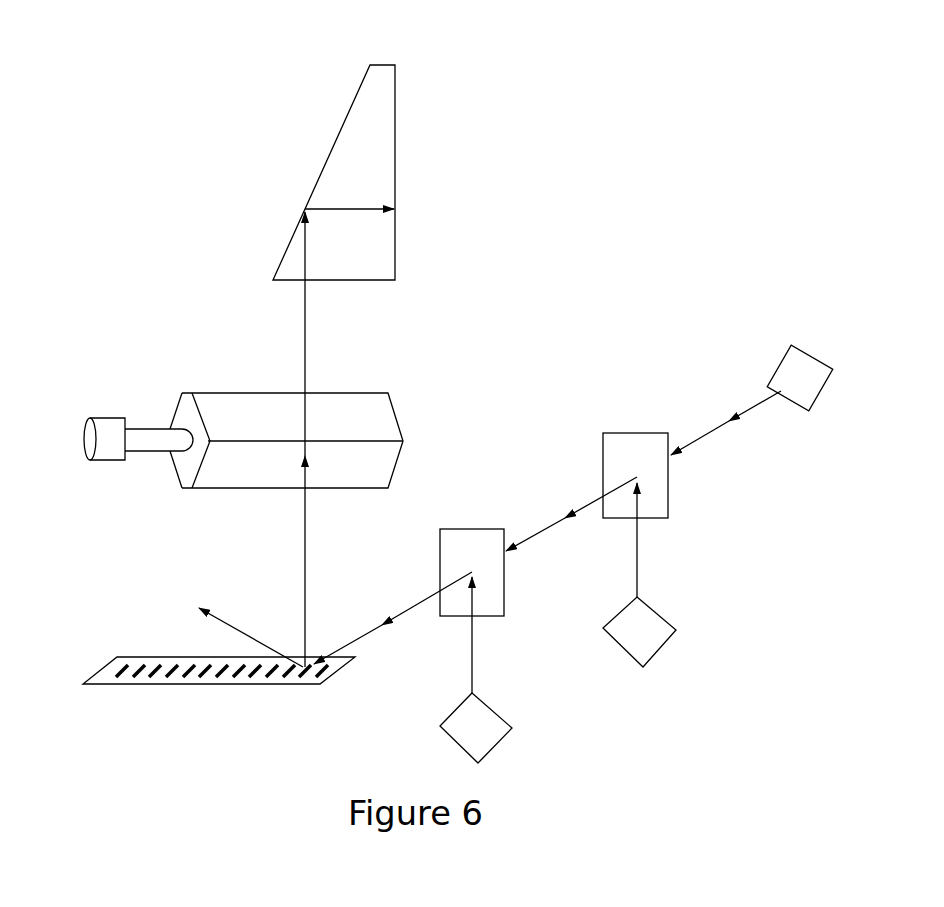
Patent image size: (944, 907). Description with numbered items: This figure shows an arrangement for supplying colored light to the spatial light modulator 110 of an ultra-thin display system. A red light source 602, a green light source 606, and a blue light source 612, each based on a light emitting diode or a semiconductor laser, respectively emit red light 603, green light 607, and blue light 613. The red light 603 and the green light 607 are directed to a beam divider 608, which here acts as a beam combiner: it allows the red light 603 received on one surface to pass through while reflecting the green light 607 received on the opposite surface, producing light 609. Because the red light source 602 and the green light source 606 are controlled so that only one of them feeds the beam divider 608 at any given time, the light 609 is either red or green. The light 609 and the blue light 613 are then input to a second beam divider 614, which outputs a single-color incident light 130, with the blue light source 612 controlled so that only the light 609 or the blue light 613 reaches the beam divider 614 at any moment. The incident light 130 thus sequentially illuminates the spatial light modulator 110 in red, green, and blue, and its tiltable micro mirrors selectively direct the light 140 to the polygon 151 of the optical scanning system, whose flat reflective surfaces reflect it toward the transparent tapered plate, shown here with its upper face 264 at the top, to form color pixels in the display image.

The upper face 264 is at (385, 63).
The polygon 151 is at (358, 391).
The spatial light modulator 110 is at (100, 664).
The light 140 is at (251, 611).
The incident light 130 is at (393, 618).
The beam divider 614 is at (471, 526).
The blue light 613 is at (468, 667).
The blue light source 612 is at (494, 705).
The light 609 is at (556, 501).
The beam divider 608 is at (630, 429).
The red light 603 is at (721, 408).
The red light source 602 is at (780, 347).
The green light 607 is at (626, 565).
The green light source 606 is at (660, 606).